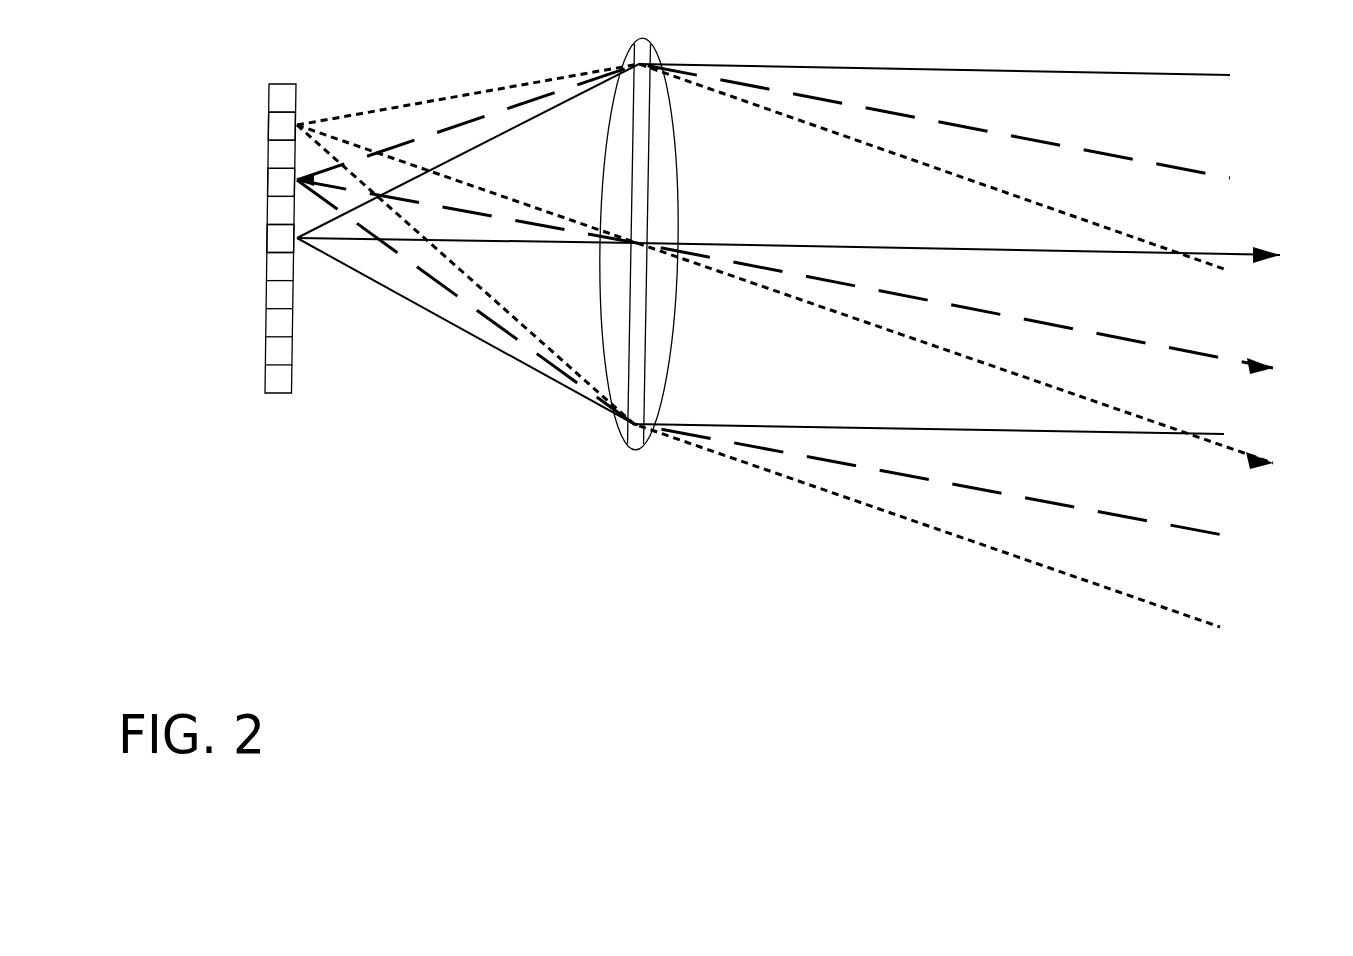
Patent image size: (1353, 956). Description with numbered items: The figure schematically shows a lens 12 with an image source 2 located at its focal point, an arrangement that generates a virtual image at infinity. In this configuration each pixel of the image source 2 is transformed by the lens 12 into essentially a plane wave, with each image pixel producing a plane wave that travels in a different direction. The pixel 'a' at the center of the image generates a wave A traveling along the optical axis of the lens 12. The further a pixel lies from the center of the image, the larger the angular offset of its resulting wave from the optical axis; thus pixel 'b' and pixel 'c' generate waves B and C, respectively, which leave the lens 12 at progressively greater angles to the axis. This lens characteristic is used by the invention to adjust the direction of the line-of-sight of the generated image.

The image source 2 is at (277, 393).
The lens 12 is at (635, 450).
The pixel a is at (269, 238).
The pixel b is at (269, 181).
The pixel c is at (269, 124).
The wave A is at (799, 249).
The wave B is at (799, 299).
The wave C is at (799, 345).